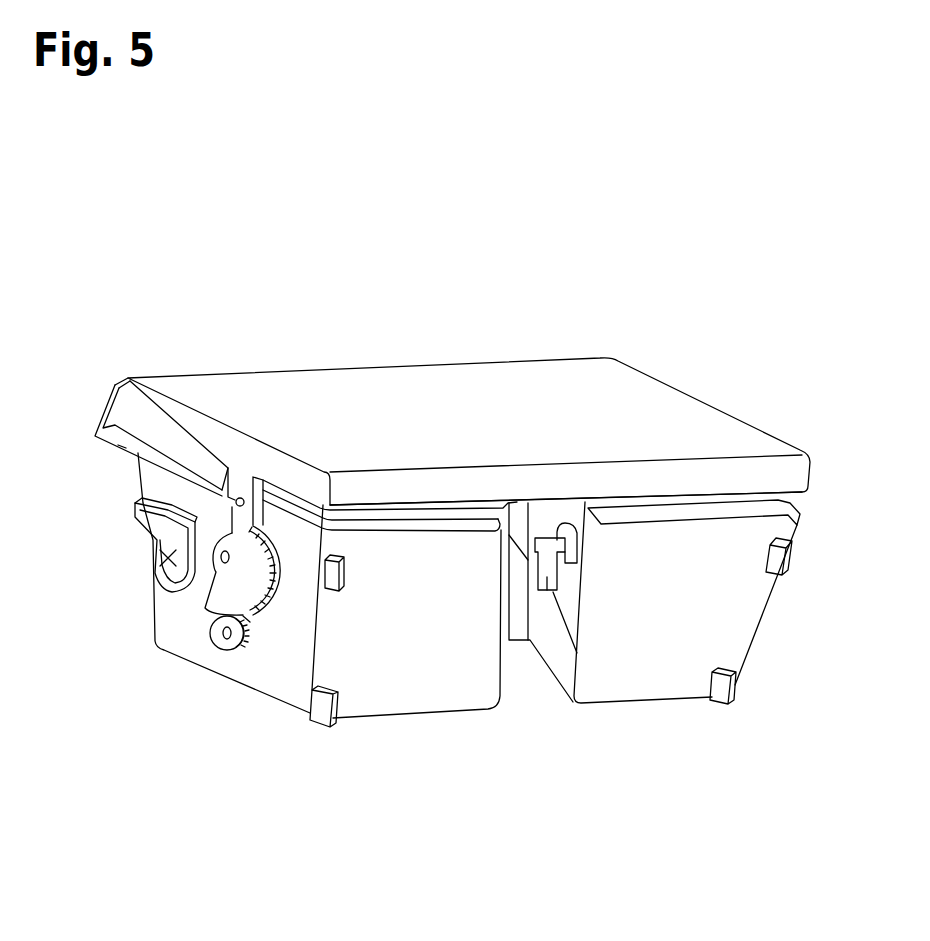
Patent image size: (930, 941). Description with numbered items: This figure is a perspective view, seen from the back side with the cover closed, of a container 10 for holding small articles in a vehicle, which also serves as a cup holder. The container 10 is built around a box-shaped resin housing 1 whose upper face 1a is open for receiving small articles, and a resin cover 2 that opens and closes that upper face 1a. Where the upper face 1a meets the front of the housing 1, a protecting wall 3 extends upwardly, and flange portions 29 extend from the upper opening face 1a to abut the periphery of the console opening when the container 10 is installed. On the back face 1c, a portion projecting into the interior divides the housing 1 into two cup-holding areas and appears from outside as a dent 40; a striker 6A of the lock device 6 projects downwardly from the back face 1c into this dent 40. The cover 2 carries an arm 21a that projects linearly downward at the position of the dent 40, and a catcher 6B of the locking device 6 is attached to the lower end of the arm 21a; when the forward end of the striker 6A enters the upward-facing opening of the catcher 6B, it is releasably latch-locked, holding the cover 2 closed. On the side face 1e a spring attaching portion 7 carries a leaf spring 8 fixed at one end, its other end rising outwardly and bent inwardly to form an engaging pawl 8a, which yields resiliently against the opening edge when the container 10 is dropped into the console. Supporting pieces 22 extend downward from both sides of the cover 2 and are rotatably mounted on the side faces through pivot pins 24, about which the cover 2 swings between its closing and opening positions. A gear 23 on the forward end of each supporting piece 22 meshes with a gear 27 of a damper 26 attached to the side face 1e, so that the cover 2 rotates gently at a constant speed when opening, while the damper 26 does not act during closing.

The container 10 is at (663, 322).
The housing 1 is at (488, 613).
The upper face 1a is at (750, 513).
The back face 1c is at (402, 685).
The right face 1e is at (291, 688).
The cover 2 is at (665, 428).
The protecting wall 3 is at (104, 401).
The lock device 6 is at (631, 682).
The striker 6A is at (585, 522).
The catcher 6B is at (567, 507).
The spring attaching portion 7 is at (158, 566).
The leaf spring 8 is at (140, 561).
The engaging pawl 8a is at (135, 522).
The arm 21a is at (565, 523).
The supporting piece 22 is at (262, 512).
The gear 23 is at (274, 602).
The pivot pin 24 is at (220, 562).
The damper 26 is at (210, 634).
The damper gear 27 is at (249, 652).
The flange portion 29 is at (122, 448).
The dent 40 is at (521, 662).